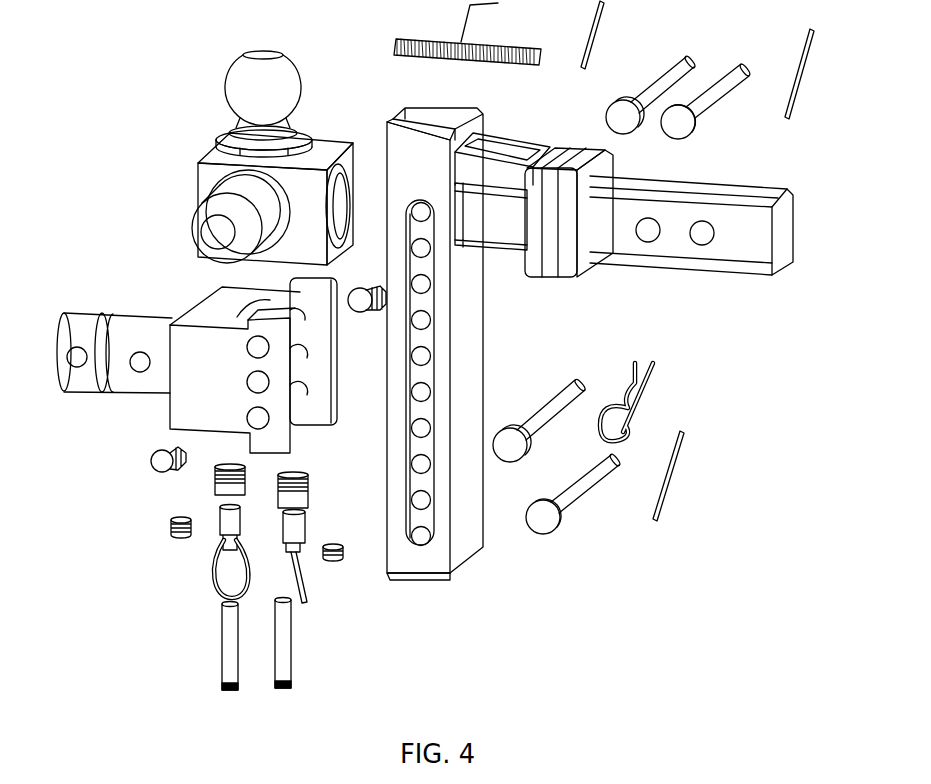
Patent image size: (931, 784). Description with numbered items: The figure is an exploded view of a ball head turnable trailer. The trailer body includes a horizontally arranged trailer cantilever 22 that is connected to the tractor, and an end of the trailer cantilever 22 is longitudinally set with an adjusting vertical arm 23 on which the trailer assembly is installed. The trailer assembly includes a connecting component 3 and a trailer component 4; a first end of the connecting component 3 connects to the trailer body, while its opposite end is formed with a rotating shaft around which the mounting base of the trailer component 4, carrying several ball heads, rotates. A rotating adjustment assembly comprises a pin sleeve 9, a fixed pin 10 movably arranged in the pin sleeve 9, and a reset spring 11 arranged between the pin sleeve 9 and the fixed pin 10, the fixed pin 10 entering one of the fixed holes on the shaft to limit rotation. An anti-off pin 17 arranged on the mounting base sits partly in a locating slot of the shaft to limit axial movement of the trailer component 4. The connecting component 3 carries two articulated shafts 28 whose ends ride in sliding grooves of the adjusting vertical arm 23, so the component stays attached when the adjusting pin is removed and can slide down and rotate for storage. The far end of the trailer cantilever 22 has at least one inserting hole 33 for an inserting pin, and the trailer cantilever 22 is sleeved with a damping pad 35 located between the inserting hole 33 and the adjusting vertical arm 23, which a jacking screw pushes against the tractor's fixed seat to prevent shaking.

The connecting component 3 is at (212, 312).
The trailer component 4 is at (203, 168).
The pin sleeve 9 is at (308, 492).
The fixed pin 10 is at (226, 539).
The reset spring 11 is at (172, 534).
The anti-off pin 17 is at (228, 642).
The trailer cantilever 22 is at (721, 187).
The adjusting vertical arm 23 is at (470, 378).
The articulated shaft 28 is at (156, 460).
The inserting hole 33 is at (703, 242).
The damping pad 35 is at (559, 145).